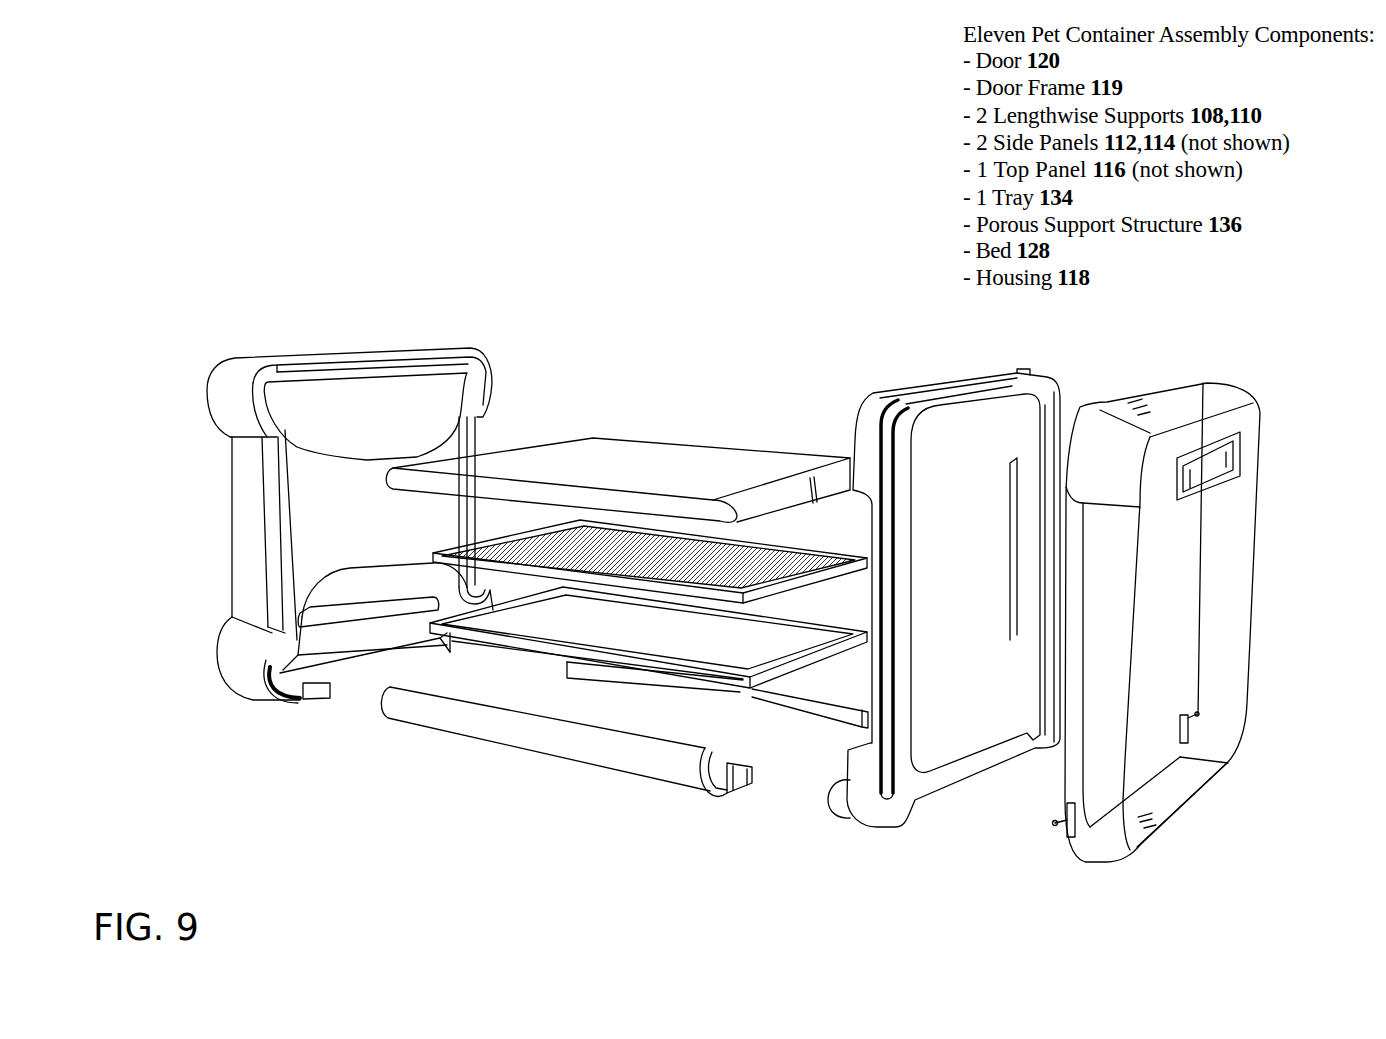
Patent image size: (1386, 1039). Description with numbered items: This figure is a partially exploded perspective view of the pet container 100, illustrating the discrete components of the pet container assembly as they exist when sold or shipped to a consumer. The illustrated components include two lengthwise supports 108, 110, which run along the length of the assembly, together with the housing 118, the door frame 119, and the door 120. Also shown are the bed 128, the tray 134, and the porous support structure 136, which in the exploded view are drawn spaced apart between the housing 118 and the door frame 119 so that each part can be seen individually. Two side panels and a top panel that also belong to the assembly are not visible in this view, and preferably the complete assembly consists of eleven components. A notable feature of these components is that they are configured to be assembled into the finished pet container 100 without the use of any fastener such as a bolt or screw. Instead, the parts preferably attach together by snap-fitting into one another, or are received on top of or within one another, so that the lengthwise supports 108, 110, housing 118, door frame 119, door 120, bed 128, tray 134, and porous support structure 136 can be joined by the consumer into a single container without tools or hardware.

The pet container 100 is at (225, 232).
The housing 118 is at (476, 358).
The bed 128 is at (663, 455).
The porous support structure 136 is at (790, 557).
The tray 134 is at (803, 633).
The lengthwise support 110 is at (843, 713).
The lengthwise support 108 is at (500, 733).
The door frame 119 is at (876, 400).
The door 120 is at (1174, 634).